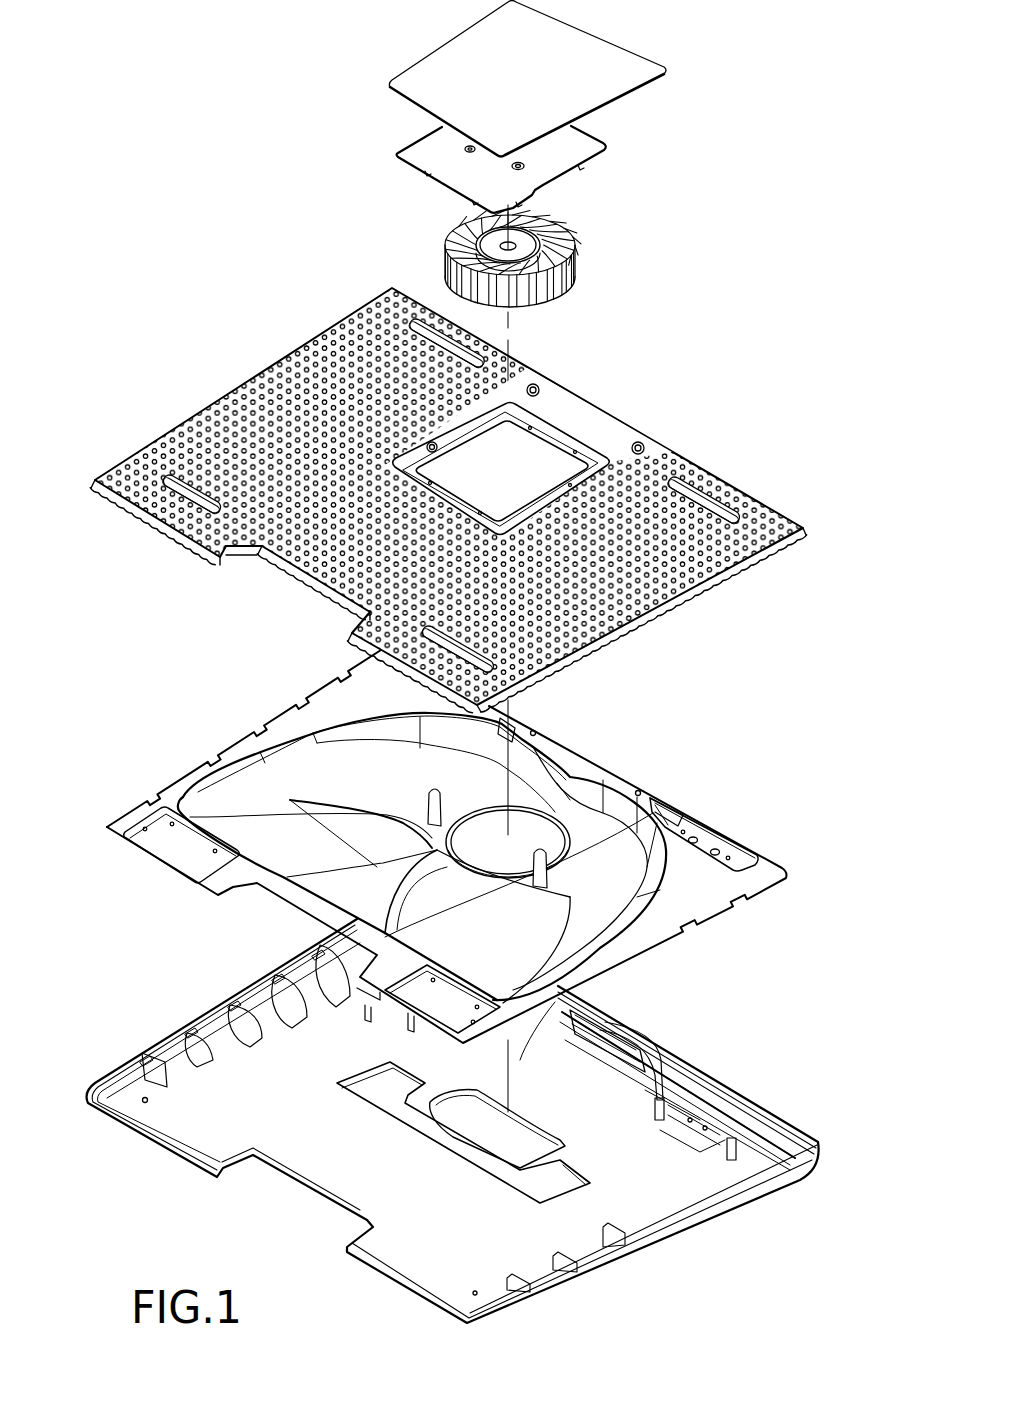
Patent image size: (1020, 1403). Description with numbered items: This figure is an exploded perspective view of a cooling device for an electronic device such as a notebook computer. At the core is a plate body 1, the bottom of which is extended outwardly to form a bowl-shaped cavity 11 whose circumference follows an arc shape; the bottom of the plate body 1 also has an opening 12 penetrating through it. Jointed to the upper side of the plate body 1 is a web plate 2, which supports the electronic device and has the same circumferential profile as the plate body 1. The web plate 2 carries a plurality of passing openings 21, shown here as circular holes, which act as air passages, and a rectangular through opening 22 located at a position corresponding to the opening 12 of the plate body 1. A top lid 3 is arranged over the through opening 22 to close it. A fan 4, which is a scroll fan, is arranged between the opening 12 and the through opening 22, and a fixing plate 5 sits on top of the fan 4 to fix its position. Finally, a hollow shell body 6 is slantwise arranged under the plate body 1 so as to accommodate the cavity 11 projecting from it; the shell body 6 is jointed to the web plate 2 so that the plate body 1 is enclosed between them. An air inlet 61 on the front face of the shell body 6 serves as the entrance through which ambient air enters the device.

The plate body 1 is at (441, 846).
The bowl-shaped cavity 11 is at (308, 758).
The opening 12 is at (525, 820).
The web plate 2 is at (448, 499).
The passing openings 21 is at (283, 377).
The through opening 22 is at (537, 452).
The top lid 3 is at (468, 50).
The fan 4 is at (578, 246).
The fixing plate 5 is at (418, 148).
The shell body 6 is at (453, 1121).
The air inlet 61 is at (625, 1022).